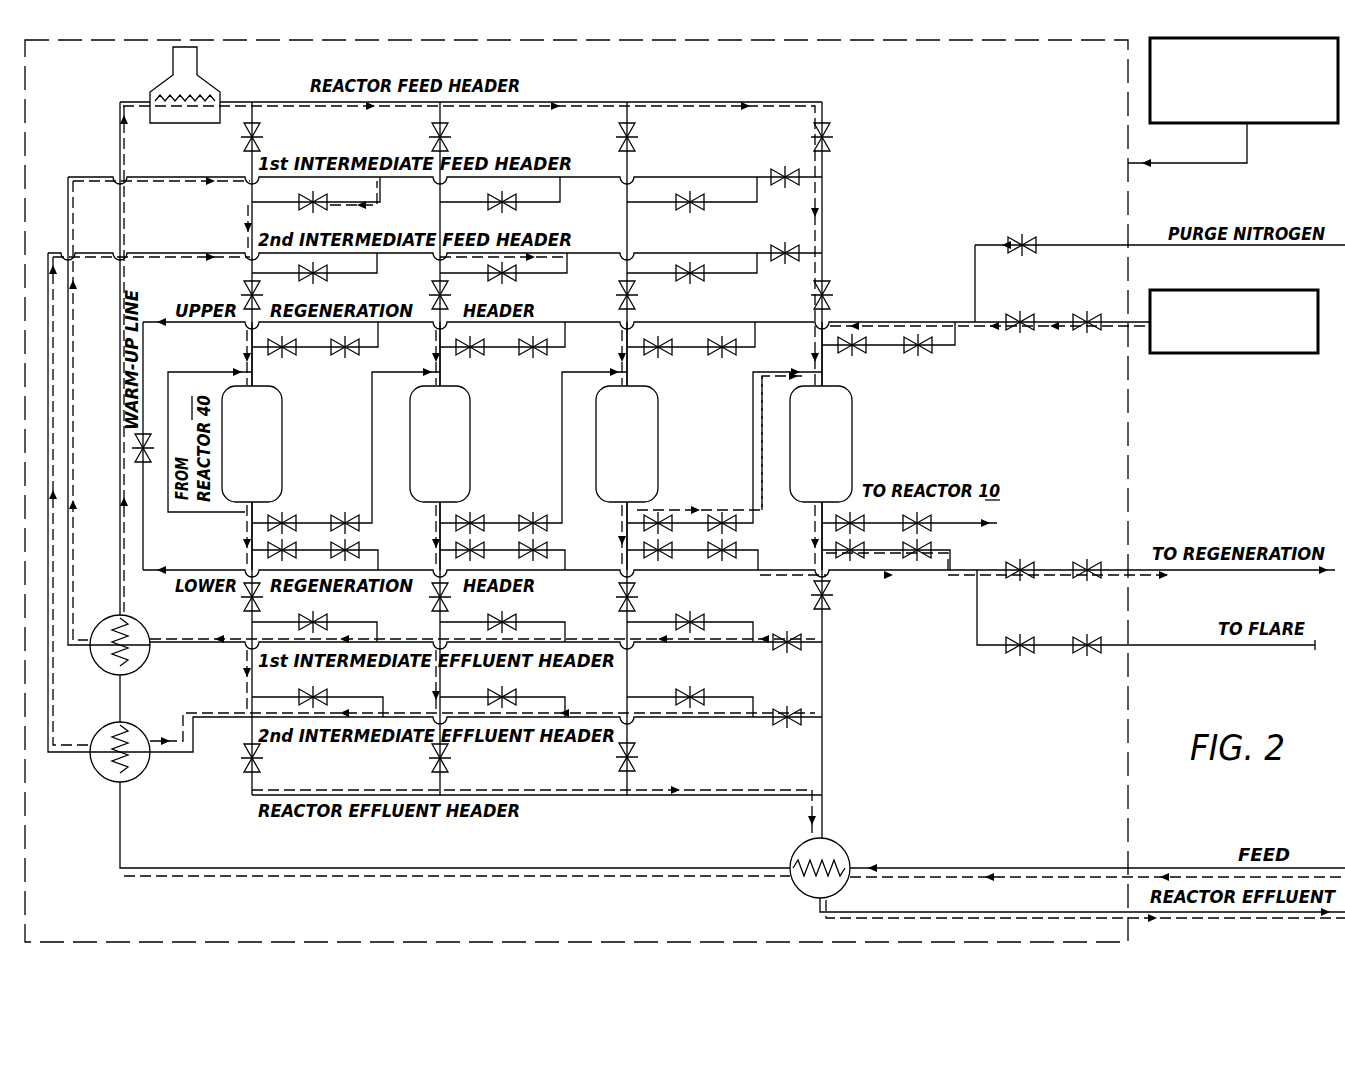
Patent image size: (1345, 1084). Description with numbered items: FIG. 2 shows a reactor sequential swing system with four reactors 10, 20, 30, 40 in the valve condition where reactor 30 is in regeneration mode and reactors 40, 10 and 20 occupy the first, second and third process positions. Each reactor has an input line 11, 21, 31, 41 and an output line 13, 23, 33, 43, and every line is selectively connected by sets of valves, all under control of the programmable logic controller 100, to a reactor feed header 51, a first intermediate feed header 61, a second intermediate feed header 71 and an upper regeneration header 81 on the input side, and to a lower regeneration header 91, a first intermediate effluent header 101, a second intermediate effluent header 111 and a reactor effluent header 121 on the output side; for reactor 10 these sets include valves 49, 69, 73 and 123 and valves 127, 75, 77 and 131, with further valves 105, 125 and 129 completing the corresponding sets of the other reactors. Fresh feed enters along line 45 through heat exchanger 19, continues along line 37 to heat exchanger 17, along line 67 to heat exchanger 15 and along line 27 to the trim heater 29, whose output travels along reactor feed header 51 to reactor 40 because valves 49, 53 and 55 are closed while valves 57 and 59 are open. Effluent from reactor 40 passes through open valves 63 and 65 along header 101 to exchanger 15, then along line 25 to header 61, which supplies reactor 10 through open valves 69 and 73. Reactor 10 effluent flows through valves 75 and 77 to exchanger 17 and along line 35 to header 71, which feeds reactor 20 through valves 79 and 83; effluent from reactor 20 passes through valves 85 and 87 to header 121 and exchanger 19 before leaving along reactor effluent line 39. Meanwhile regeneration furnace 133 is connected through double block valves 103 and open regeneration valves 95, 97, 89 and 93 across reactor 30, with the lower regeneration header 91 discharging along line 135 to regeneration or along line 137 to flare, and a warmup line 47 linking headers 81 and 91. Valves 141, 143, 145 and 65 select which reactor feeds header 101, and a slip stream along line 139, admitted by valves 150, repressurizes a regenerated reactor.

The reactor 10 is at (283, 418).
The reactor 20 is at (471, 418).
The reactor 30 is at (659, 418).
The reactor 40 is at (853, 418).
The input line 11 is at (250, 360).
The input line 21 is at (438, 360).
The input line 31 is at (624, 356).
The input line 41 is at (818, 352).
The output line 13 is at (250, 527).
The output line 23 is at (438, 527).
The output line 33 is at (625, 526).
The output line 43 is at (819, 530).
The heat exchanger 15 is at (140, 627).
The heat exchanger 17 is at (140, 729).
The heat exchanger 19 is at (842, 849).
The line 25 is at (69, 418).
The line 27 is at (119, 368).
The trim heater 29 is at (220, 92).
The line 35 is at (49, 470).
The line 37 is at (671, 867).
The reactor effluent line 39 is at (1095, 909).
The feed line 45 is at (1095, 867).
The warmup line 47 is at (145, 362).
The valve 49 is at (259, 134).
The reactor feed header 51 is at (650, 101).
The valve 53 is at (447, 133).
The valve 55 is at (634, 133).
The valve 57 is at (829, 133).
The valve 59 is at (830, 294).
The first intermediate feed header 61 is at (699, 176).
The valve 63 is at (824, 595).
The valve 65 is at (787, 640).
The line 67 is at (121, 705).
The valve 69 is at (324, 201).
The second intermediate feed header 71 is at (707, 252).
The valve 73 is at (246, 293).
The valve 75 is at (247, 610).
The valve 77 is at (323, 697).
The valve 79 is at (514, 274).
The upper regeneration header 81 is at (708, 321).
The valve 83 is at (434, 293).
The valve 85 is at (435, 610).
The valve 87 is at (447, 763).
The regeneration valve 89 is at (624, 552).
The lower regeneration header 91 is at (560, 574).
The regeneration valve 93 is at (744, 551).
The regeneration valve 95 is at (662, 357).
The regeneration valve 97 is at (719, 358).
The programmable logic controller 100 is at (1283, 124).
The first intermediate effluent header 101 is at (652, 645).
The regeneration system double block valves 103 is at (1030, 313).
The valve 105 is at (857, 356).
The second intermediate effluent header 111 is at (669, 720).
The reactor effluent header 121 is at (601, 798).
The valve 123 is at (288, 357).
The valves 125 is at (477, 357).
The valve 127 is at (249, 552).
The outlet line with valves 129 is at (437, 552).
The valve 131 is at (260, 763).
The regeneration furnace 133 is at (1270, 290).
The line 135 is at (1112, 567).
The line 137 is at (1112, 643).
The line 139 is at (758, 456).
The valve 141 is at (324, 621).
The valve 143 is at (513, 621).
The valve 145 is at (700, 621).
The valves 150 is at (726, 514).